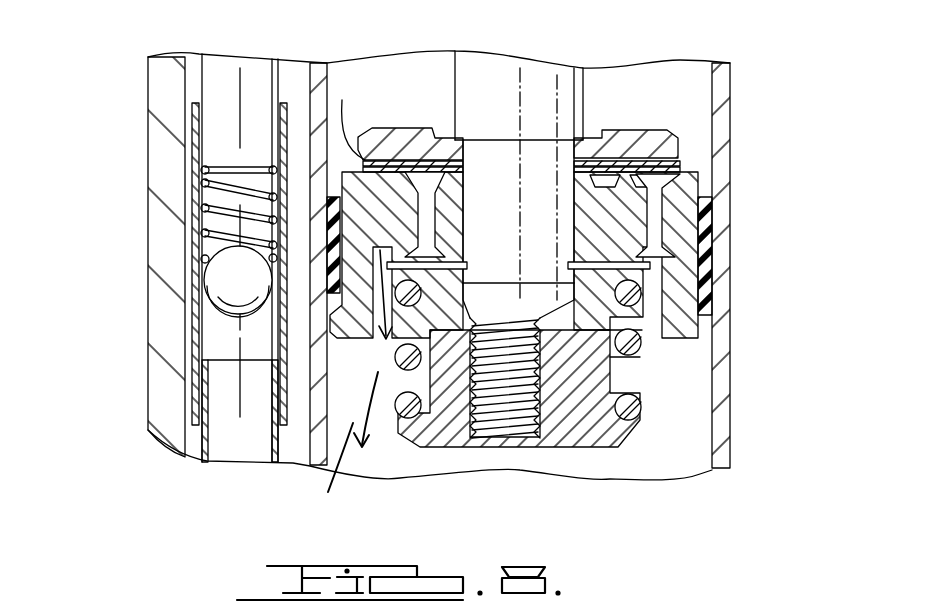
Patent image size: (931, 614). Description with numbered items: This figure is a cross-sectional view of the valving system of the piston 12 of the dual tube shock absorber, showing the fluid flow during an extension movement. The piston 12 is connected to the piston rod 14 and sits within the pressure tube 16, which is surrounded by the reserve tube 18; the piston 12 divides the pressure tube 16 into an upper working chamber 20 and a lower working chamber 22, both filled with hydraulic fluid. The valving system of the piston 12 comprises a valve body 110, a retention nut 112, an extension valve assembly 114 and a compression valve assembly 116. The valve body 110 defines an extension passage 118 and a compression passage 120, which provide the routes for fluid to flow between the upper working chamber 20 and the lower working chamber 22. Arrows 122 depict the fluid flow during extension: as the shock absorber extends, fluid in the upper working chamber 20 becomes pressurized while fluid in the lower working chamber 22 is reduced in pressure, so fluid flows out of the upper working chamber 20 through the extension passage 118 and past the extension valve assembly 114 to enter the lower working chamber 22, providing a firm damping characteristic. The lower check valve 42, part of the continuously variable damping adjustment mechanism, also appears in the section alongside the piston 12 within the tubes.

The piston 12 is at (389, 93).
The piston rod 14 is at (529, 111).
The pressure tube 16 is at (318, 443).
The reserve tube 18 is at (160, 372).
The upper working chamber 20 is at (684, 109).
The lower working chamber 22 is at (686, 392).
The lower check valve 42 is at (215, 277).
The valve body 110 is at (700, 195).
The retention nut 112 is at (446, 438).
The extension valve assembly 114 is at (640, 315).
The compression valve assembly 116 is at (693, 153).
The extension passage 118 is at (436, 213).
The compression passage 120 is at (700, 243).
The arrows 122 is at (337, 390).